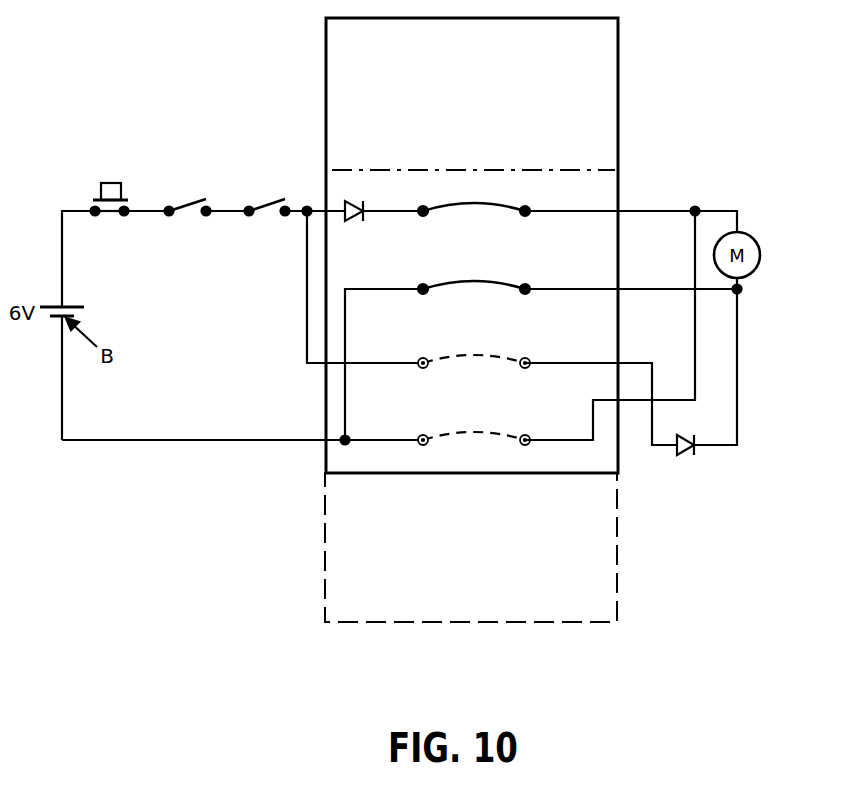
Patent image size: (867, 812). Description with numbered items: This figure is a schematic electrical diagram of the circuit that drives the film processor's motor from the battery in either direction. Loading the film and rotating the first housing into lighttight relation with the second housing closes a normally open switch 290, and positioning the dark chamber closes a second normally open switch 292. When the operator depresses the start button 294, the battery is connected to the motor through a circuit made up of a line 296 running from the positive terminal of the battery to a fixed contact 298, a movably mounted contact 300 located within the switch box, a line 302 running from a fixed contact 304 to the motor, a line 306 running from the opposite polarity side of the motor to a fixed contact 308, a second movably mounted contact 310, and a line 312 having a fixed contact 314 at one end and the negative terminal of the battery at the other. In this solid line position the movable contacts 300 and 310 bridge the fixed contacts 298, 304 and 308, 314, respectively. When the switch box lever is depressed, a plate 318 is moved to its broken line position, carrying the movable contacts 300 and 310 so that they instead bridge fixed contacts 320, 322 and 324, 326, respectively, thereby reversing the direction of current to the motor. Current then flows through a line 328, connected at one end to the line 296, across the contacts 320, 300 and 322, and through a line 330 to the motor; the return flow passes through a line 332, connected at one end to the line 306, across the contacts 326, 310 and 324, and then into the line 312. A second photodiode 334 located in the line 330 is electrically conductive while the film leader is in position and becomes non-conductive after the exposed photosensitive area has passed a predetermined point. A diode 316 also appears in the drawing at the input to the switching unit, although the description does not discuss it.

The normally open switch 290 is at (181, 205).
The second normally open switch 292 is at (262, 205).
The start button 294 is at (111, 183).
The line 296 is at (62, 272).
The fixed contact 298 is at (420, 205).
The movably mounted contact 300 is at (468, 203).
The line 302 is at (651, 211).
The fixed contact 304 is at (527, 205).
The line 306 is at (640, 289).
The fixed contact 308 is at (527, 284).
The movably mounted contact 310 is at (470, 281).
The line 312 is at (222, 440).
The fixed contact 314 is at (421, 284).
The diode 316 is at (360, 205).
The plate 318 is at (415, 473).
The fixed contact 320 is at (420, 358).
The fixed contact 322 is at (529, 359).
The fixed contact 324 is at (420, 436).
The fixed contact 326 is at (529, 436).
The line 328 is at (307, 305).
The line 330 is at (737, 375).
The line 332 is at (696, 310).
The second photodiode 334 is at (688, 455).